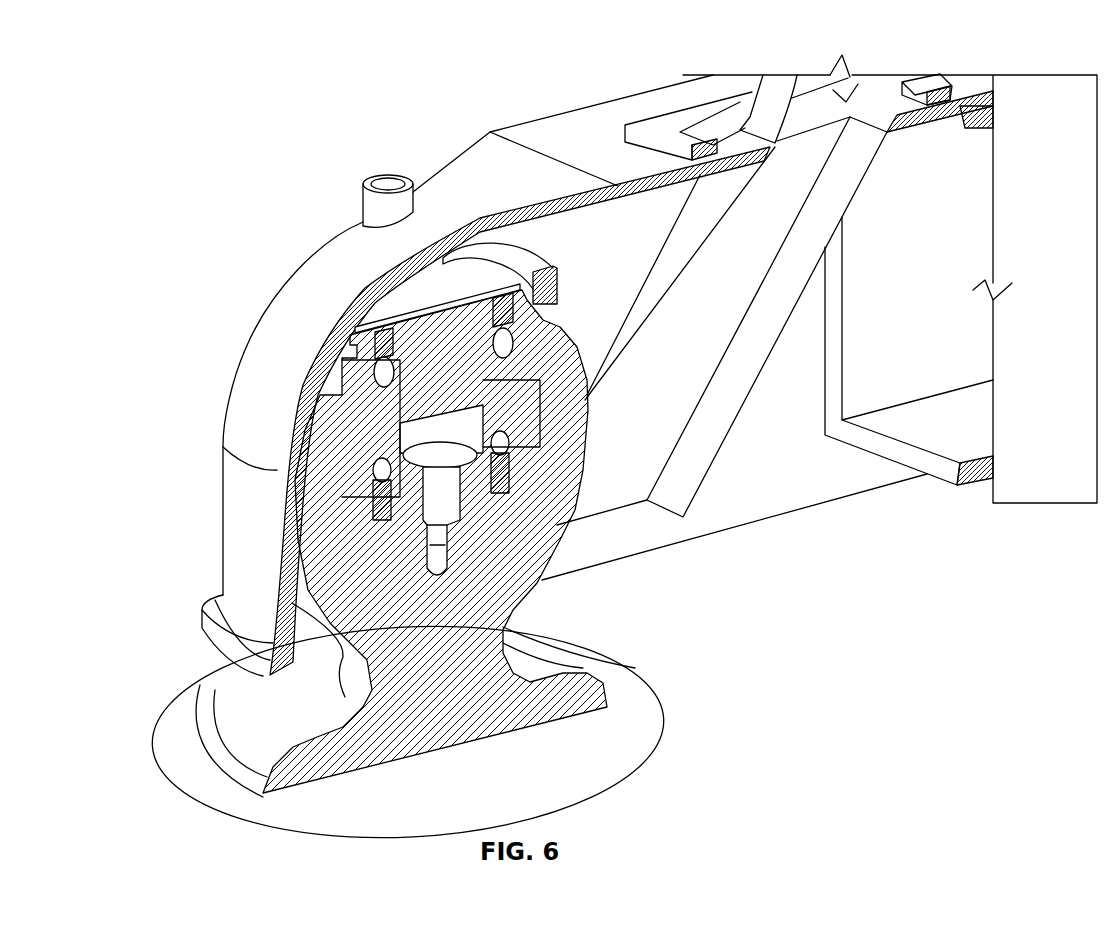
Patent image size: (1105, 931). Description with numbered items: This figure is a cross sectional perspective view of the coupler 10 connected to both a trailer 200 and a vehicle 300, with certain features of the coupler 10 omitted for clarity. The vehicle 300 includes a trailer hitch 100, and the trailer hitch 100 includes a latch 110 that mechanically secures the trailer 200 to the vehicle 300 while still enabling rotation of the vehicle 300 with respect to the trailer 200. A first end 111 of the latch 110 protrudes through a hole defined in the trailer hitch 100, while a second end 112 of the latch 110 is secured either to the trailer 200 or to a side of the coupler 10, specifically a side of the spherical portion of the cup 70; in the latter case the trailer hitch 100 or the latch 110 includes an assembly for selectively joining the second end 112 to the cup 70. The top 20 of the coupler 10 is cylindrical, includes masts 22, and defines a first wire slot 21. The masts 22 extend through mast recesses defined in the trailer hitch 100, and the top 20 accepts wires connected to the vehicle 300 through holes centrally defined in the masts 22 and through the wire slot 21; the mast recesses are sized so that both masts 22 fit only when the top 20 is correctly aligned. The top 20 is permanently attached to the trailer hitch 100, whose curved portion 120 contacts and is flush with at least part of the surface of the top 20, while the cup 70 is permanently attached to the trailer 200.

The coupler 10 is at (599, 404).
The top 20 is at (562, 285).
The first wire slot 21 is at (538, 258).
The masts 22 is at (386, 176).
The cup 70 is at (587, 489).
The trailer hitch 100 is at (571, 145).
The latch 110 is at (737, 422).
The first end 111 is at (779, 98).
The second end 112 is at (650, 540).
The curved portion 120 is at (298, 292).
The trailer 200 is at (366, 821).
The vehicle 300 is at (1077, 303).